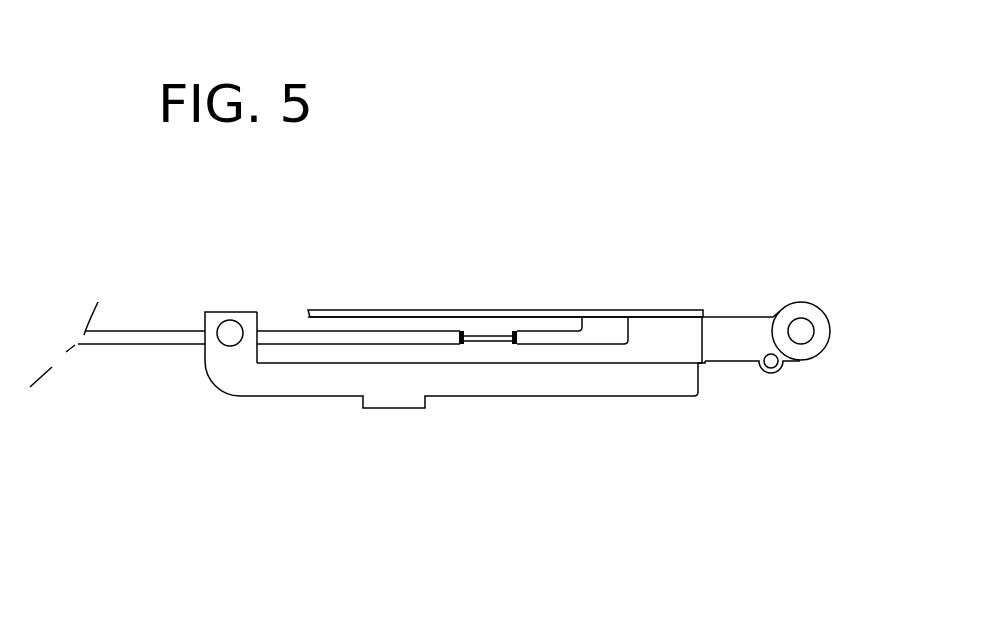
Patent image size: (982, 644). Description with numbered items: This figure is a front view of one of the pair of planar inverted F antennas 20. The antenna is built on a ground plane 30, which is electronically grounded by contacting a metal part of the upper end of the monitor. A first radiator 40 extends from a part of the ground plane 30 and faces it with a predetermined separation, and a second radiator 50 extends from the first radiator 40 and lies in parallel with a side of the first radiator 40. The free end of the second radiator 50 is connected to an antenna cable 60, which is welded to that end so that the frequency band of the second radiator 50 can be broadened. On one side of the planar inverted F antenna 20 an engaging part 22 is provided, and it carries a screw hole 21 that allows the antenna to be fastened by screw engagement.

The planar inverted F antenna 20 is at (577, 101).
The screw hole 21 is at (802, 328).
The engaging part 22 is at (743, 323).
The ground plane 30 is at (648, 380).
The first radiator 40 is at (390, 310).
The second radiator 50 is at (530, 338).
The antenna cable 60 is at (320, 338).